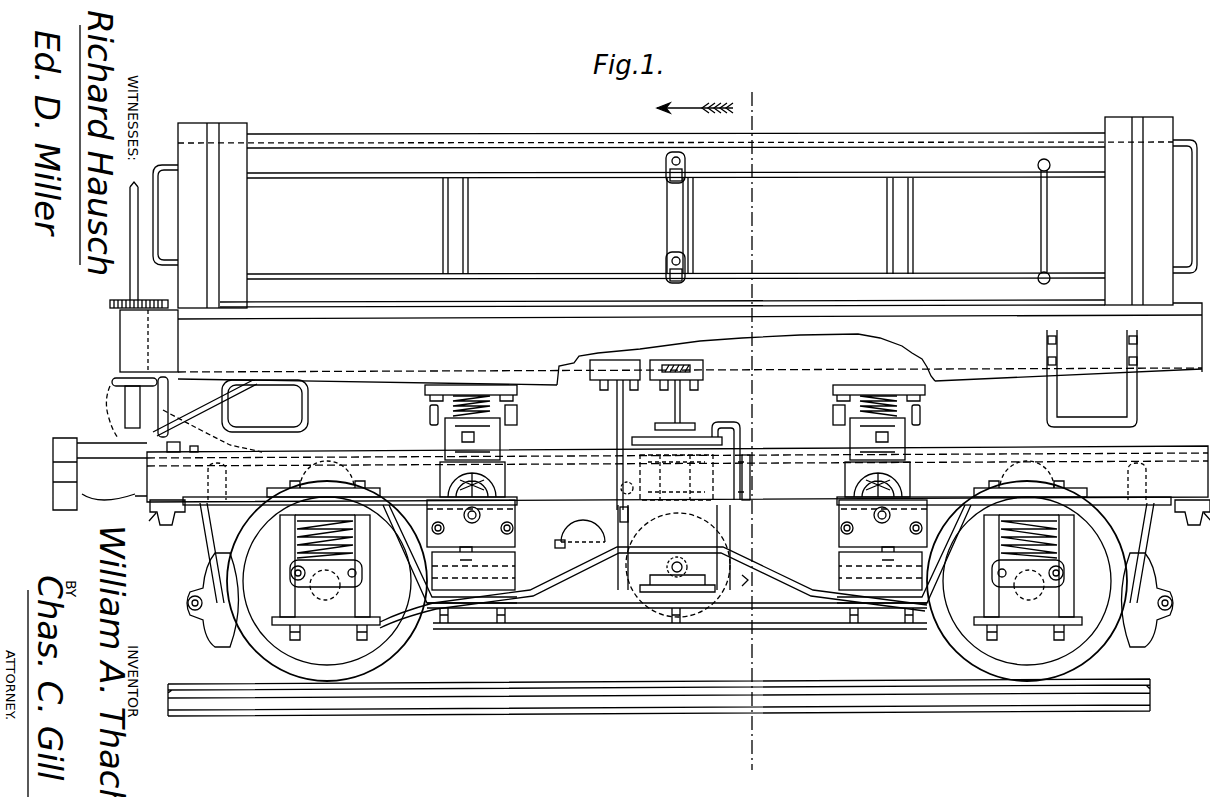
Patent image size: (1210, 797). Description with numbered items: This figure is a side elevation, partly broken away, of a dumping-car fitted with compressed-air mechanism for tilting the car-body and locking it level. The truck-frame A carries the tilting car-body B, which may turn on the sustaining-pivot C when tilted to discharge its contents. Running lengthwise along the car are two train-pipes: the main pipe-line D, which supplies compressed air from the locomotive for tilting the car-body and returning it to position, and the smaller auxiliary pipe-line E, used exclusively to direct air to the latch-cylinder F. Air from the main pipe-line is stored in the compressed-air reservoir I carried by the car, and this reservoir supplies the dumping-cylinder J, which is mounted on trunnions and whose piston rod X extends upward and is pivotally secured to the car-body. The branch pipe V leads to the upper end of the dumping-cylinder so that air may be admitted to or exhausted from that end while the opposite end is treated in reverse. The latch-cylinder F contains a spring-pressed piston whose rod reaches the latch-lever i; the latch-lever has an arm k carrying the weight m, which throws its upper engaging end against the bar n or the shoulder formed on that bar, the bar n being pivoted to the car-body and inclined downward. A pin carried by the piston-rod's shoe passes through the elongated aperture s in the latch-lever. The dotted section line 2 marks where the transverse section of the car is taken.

The truck-frame A is at (677, 474).
The tilting car-body B is at (627, 313).
The sustaining-pivot C is at (673, 441).
The main pipe-line D is at (805, 543).
The auxiliary pipe-line E is at (768, 557).
The latch-cylinder F is at (751, 483).
The compressed-air reservoir I is at (633, 577).
The dumping-cylinder J is at (664, 427).
The branch pipe V is at (742, 425).
The piston-rod X is at (681, 411).
The latch-lever i is at (619, 517).
The arm k is at (555, 547).
The weight m is at (583, 529).
The bar n is at (616, 427).
The elongated aperture s is at (746, 584).
The section line 2 2 is at (751, 431).